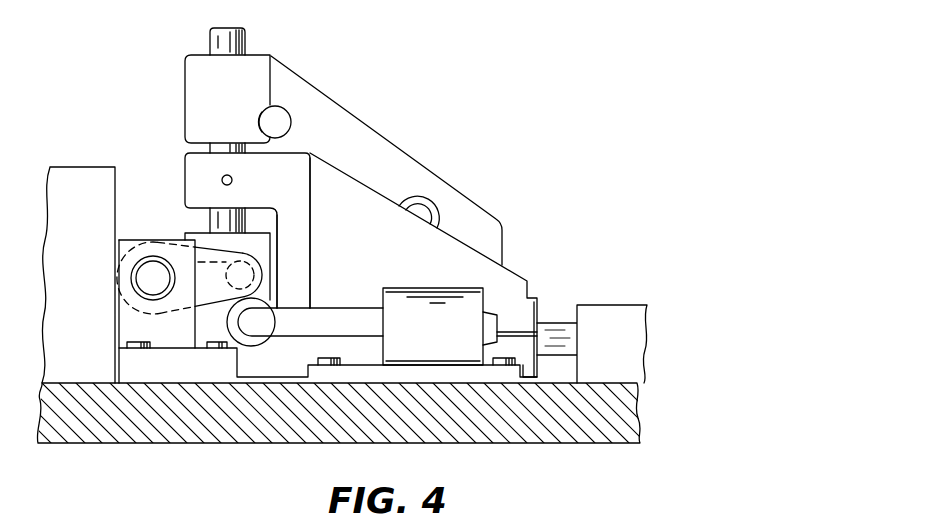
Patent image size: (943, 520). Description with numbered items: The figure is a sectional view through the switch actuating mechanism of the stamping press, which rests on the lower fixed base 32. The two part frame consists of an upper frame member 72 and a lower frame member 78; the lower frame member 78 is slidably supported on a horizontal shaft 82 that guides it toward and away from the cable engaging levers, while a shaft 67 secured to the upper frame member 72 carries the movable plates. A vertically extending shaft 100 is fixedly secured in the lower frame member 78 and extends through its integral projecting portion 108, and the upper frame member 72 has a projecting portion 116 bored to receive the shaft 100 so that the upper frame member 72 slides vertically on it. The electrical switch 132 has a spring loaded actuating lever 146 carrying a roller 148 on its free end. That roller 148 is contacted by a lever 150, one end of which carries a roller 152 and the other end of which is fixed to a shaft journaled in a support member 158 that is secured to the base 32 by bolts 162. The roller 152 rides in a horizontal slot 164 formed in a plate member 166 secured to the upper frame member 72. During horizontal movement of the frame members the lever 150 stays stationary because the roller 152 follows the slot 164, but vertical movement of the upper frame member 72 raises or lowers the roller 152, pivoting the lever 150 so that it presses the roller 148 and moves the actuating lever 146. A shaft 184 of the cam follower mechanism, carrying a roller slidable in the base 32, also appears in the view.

The lower fixed base 32 is at (256, 430).
The shaft 67 is at (275, 123).
The upper frame member 72 is at (365, 145).
The lower frame member 78 is at (302, 233).
The shaft 82 is at (548, 335).
The shaft 100 is at (246, 41).
The projecting portion 108 is at (200, 185).
The projecting portion 116 is at (195, 98).
The electrical switch 132 is at (447, 338).
The actuating lever 146 is at (318, 318).
The roller 148 is at (258, 347).
The lever 150 is at (200, 297).
The roller 152 is at (240, 285).
The support member 158 is at (128, 317).
The bolts 162 is at (127, 338).
The horizontal slot 164 is at (263, 267).
The plate member 166 is at (250, 240).
The shaft 184 is at (147, 278).